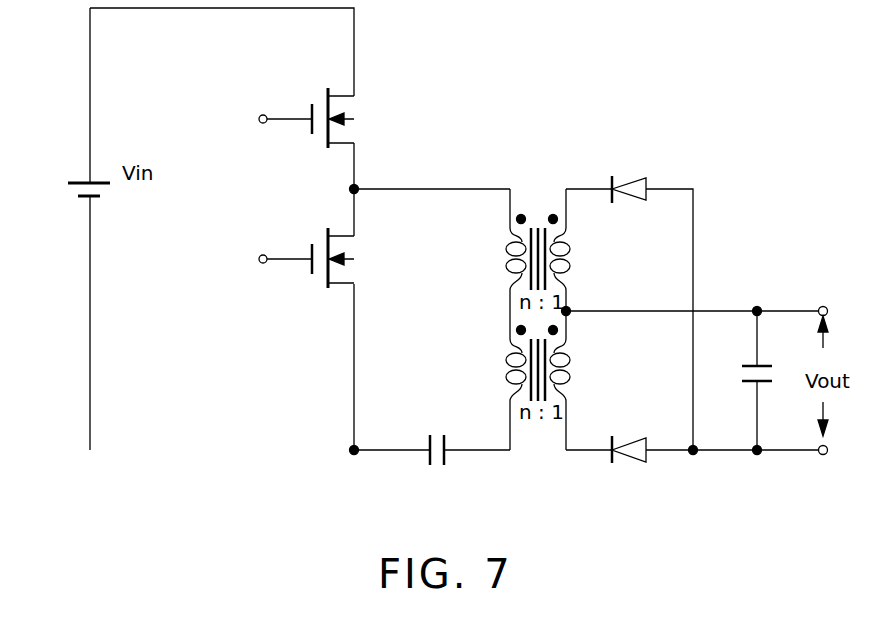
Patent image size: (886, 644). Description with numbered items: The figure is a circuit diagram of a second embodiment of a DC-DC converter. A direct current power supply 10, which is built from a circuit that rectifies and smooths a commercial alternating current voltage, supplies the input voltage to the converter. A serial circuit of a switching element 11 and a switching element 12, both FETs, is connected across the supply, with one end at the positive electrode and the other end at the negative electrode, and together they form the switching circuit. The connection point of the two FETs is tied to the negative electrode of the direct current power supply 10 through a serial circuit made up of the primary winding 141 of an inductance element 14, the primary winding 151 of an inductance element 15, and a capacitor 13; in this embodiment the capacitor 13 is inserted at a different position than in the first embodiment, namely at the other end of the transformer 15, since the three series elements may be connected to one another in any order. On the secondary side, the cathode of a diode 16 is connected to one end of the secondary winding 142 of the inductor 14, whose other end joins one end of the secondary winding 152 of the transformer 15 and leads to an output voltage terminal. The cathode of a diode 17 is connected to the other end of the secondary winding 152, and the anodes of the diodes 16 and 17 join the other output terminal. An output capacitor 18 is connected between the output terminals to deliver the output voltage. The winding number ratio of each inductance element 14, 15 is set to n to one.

The direct current power supply 10 is at (72, 192).
The switching element 11 is at (312, 145).
The switching element 12 is at (312, 285).
The capacitor 13 is at (437, 468).
The inductance element 14 is at (541, 220).
The primary winding 141 is at (503, 259).
The secondary winding 142 is at (572, 258).
The inductance element 15 is at (541, 411).
The primary winding 151 is at (503, 369).
The secondary winding 152 is at (572, 369).
The diode 16 is at (630, 173).
The diode 17 is at (628, 466).
The output capacitor 18 is at (775, 372).